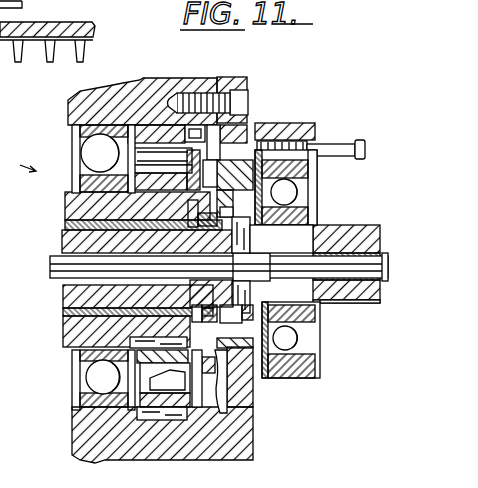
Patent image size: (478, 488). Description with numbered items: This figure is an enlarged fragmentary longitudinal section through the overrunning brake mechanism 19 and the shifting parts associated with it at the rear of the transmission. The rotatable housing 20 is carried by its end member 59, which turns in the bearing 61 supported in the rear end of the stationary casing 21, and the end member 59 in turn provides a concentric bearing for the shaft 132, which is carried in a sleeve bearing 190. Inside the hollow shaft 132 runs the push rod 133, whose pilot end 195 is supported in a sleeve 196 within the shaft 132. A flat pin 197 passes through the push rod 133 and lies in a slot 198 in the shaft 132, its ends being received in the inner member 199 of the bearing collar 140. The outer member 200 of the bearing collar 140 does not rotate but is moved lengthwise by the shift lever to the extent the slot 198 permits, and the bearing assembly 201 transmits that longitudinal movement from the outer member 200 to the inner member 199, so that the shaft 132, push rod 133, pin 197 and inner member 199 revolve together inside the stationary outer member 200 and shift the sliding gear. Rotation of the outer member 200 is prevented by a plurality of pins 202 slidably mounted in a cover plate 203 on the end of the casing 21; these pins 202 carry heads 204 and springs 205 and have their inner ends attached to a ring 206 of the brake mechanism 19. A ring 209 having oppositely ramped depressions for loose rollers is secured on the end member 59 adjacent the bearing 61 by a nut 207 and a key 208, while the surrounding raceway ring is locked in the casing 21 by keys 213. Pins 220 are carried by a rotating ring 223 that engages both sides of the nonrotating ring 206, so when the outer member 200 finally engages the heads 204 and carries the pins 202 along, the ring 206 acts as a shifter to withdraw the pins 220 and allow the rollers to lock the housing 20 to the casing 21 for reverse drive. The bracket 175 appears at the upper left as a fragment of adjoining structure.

The overrunning brake mechanism 19 is at (18, 162).
The housing 20 is at (93, 24).
The stationary casing 21 is at (68, 106).
The end member 59 is at (67, 206).
The bearing 61 is at (93, 379).
The shaft 132 is at (65, 299).
The push rod 133 is at (49, 266).
The bearing collar 140 is at (301, 379).
The retainer 175 is at (25, 10).
The sleeve bearing 190 is at (66, 226).
The pilot end 195 is at (331, 302).
The sleeve 196 is at (343, 303).
The flat pin 197 is at (251, 288).
The slot 198 is at (281, 239).
The inner member 199 is at (319, 212).
The outer member 200 is at (312, 138).
The bearing assembly 201 is at (306, 180).
The pins 202 is at (336, 144).
The cover plate 203 is at (248, 79).
The heads 204 is at (361, 140).
The springs 205 is at (284, 124).
The ring 206 is at (206, 92).
The nut 207 is at (240, 387).
The key 208 is at (68, 339).
The ring 209 is at (168, 421).
The keys 213 is at (80, 461).
The pins 220 is at (150, 140).
The rotating ring 223 is at (168, 105).